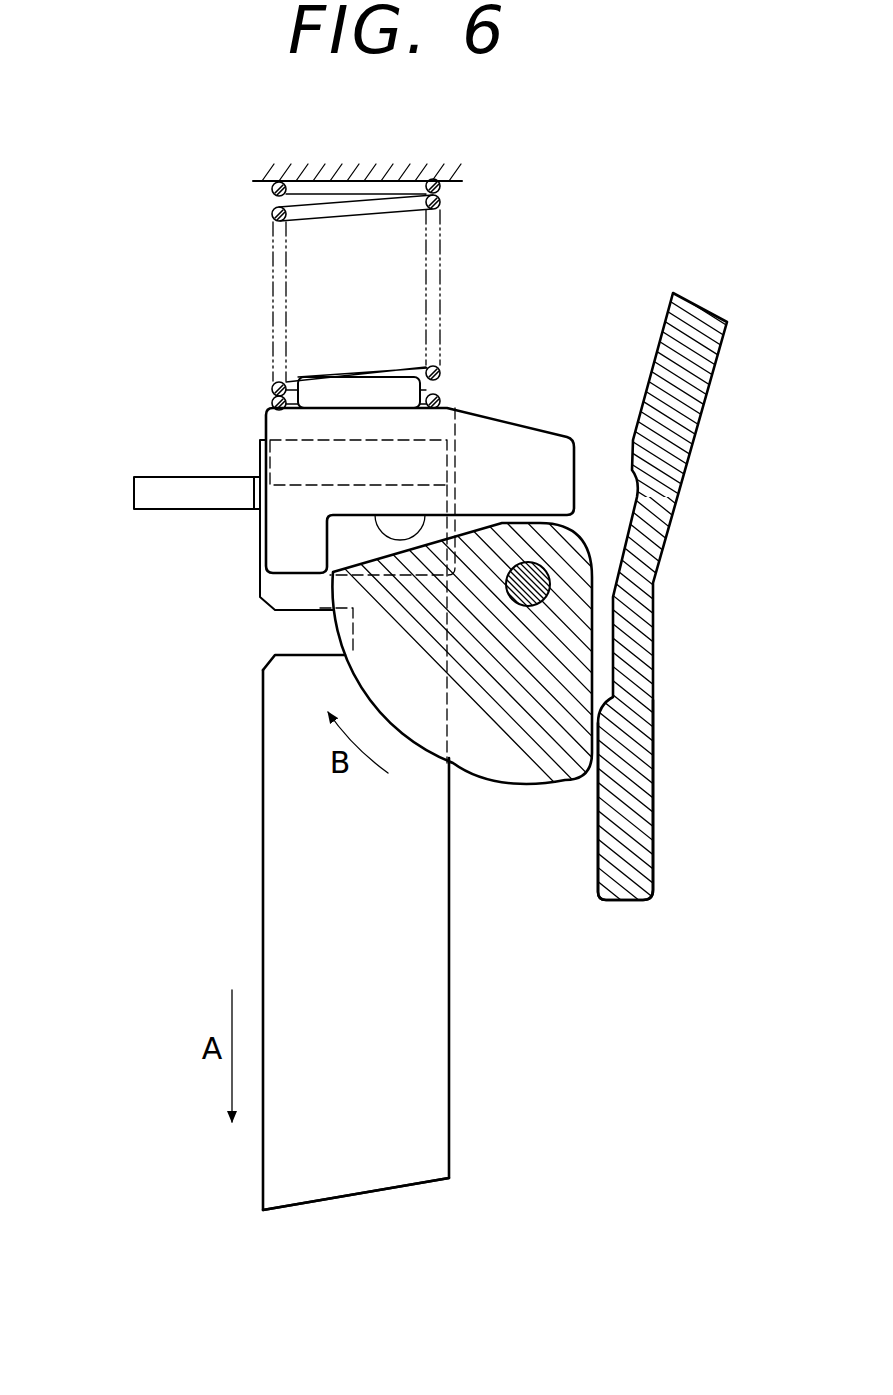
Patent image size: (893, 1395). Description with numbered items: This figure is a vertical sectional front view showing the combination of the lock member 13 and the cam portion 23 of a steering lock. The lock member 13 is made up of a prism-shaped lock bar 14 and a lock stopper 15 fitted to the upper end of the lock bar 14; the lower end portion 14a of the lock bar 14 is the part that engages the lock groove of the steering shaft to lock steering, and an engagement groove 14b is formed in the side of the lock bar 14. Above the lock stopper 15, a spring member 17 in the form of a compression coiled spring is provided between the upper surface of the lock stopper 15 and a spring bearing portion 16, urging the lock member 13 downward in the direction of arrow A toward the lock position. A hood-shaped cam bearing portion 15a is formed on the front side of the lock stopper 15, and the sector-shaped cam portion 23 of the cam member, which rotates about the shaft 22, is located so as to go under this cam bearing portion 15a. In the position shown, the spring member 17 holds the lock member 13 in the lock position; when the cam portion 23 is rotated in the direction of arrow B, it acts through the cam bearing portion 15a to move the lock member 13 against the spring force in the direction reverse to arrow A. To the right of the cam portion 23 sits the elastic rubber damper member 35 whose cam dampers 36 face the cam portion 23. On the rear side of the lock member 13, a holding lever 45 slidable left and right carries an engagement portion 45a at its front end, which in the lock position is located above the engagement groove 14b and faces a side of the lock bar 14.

The lock member 13 is at (276, 973).
The lock bar 14 is at (280, 973).
The lower end portion 14a is at (387, 1180).
The engagement groove 14b is at (293, 655).
The lock stopper 15 is at (429, 534).
The cam bearing portion 15a is at (427, 515).
The spring bearing portion 16 is at (263, 179).
The spring member 17 is at (268, 387).
The shaft 22 is at (551, 592).
The cam portion 23 is at (490, 773).
The damper member 35 is at (648, 668).
The cam damper 36 is at (650, 615).
The holding lever 45 is at (172, 507).
The engagement portion 45a is at (216, 503).